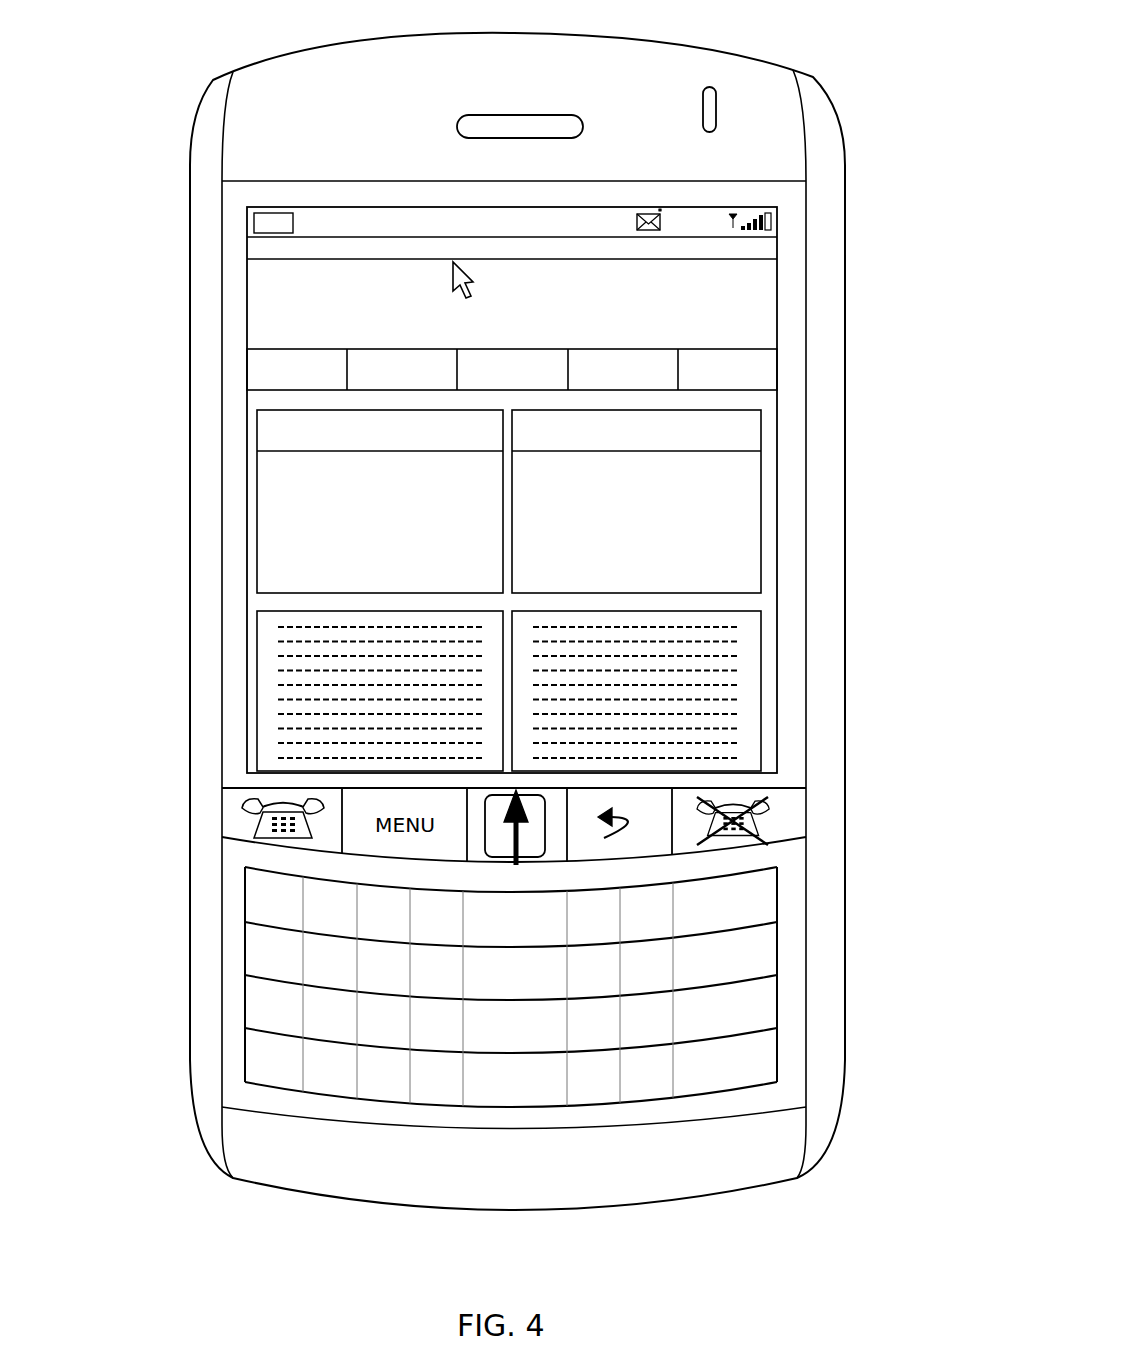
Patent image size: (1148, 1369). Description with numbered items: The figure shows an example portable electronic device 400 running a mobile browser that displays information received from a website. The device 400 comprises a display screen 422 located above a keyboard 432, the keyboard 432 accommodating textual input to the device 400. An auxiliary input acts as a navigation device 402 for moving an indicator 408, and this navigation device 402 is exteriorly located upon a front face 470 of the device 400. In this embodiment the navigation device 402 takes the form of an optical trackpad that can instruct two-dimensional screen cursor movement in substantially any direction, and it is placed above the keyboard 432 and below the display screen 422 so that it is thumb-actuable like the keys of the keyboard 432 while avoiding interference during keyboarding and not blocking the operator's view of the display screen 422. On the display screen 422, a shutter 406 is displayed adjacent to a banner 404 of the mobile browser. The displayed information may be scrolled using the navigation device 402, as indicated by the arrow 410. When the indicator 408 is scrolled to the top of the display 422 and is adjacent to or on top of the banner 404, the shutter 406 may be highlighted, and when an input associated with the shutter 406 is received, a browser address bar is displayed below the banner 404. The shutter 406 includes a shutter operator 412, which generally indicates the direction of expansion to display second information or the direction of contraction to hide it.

The portable electronic device 400 is at (177, 90).
The navigation device 402 is at (530, 843).
The banner 404 is at (294, 232).
The shutter 406 is at (747, 253).
The indicator 408 is at (453, 262).
The arrow 410 is at (523, 808).
The shutter operator 412 is at (498, 250).
The display screen 422 is at (264, 573).
The keyboard 432 is at (256, 996).
The front face 470 is at (229, 1112).